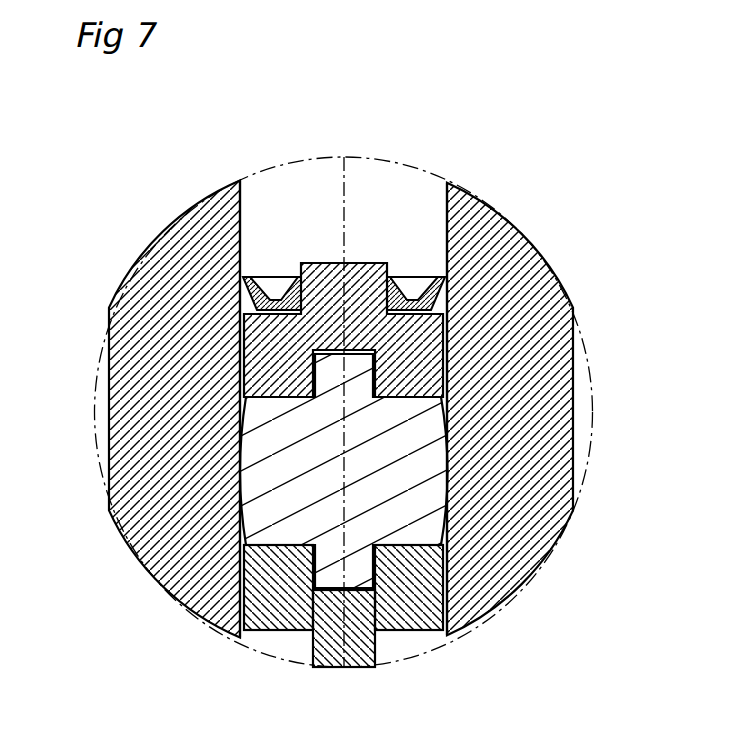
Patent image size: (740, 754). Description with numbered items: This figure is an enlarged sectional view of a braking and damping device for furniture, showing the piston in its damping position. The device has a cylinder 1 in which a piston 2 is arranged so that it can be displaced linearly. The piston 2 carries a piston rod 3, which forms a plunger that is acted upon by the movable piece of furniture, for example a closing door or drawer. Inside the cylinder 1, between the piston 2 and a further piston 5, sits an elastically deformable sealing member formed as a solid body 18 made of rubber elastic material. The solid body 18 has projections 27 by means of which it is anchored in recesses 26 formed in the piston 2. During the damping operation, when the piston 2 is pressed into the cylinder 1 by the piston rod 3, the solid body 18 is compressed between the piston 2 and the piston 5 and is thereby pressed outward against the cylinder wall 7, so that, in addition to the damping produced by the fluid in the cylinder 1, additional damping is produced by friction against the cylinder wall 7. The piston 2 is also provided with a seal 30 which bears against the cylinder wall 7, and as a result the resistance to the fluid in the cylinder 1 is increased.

The cylinder 1 is at (488, 250).
The piston 2 is at (243, 616).
The piston rod 3 is at (365, 647).
The piston 5 is at (272, 348).
The cylinder wall 7 is at (446, 230).
The solid body 18 is at (287, 478).
The recesses 26 is at (322, 596).
The projections 27 is at (362, 565).
The seal 30 is at (243, 285).